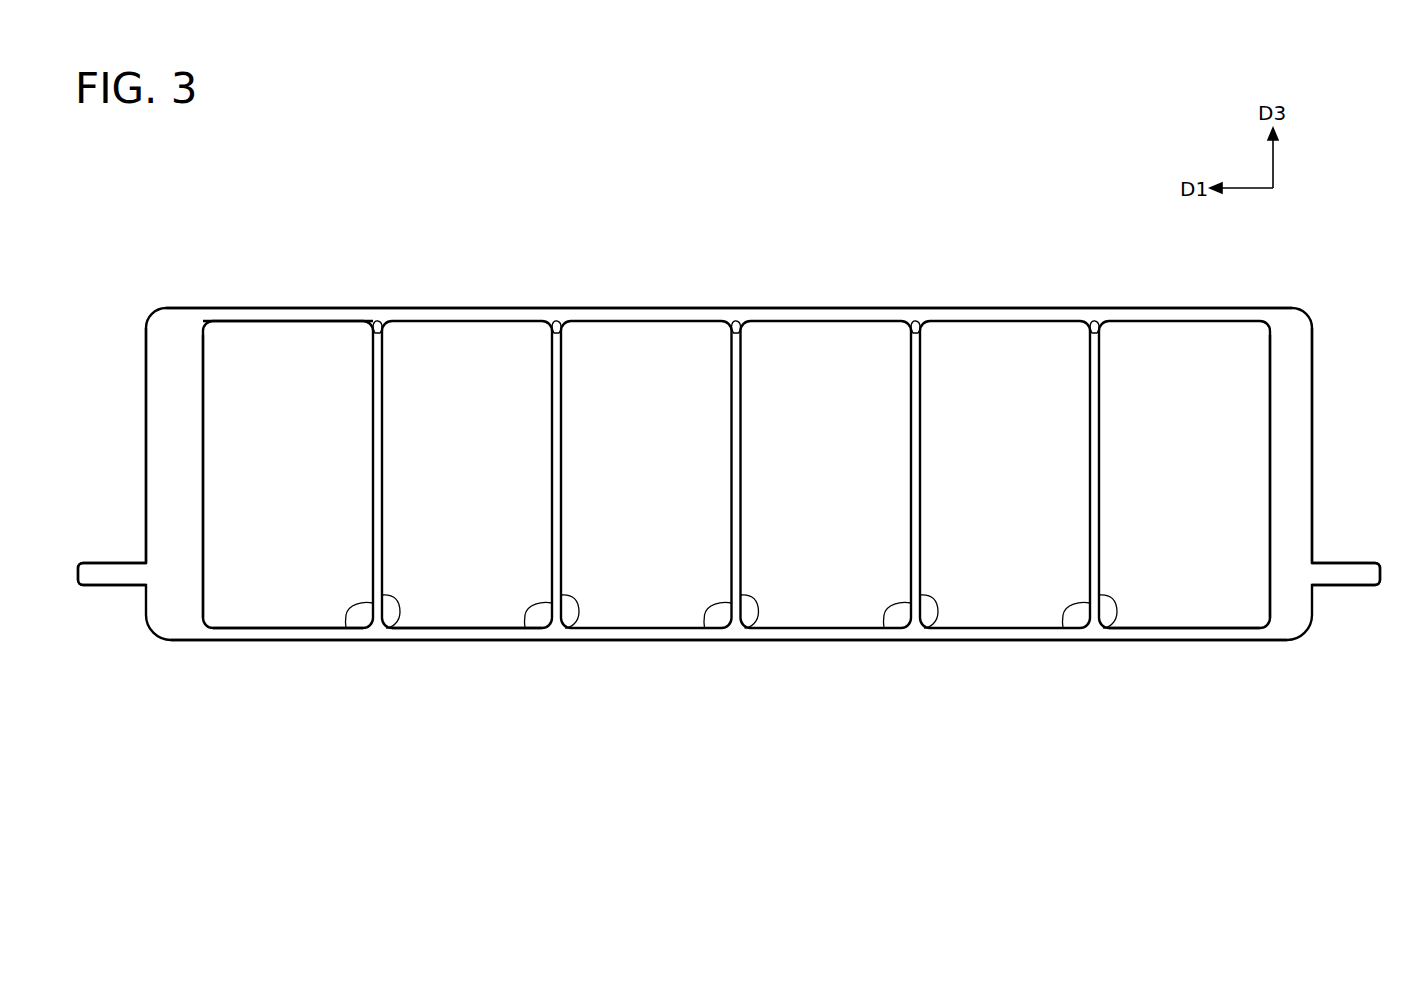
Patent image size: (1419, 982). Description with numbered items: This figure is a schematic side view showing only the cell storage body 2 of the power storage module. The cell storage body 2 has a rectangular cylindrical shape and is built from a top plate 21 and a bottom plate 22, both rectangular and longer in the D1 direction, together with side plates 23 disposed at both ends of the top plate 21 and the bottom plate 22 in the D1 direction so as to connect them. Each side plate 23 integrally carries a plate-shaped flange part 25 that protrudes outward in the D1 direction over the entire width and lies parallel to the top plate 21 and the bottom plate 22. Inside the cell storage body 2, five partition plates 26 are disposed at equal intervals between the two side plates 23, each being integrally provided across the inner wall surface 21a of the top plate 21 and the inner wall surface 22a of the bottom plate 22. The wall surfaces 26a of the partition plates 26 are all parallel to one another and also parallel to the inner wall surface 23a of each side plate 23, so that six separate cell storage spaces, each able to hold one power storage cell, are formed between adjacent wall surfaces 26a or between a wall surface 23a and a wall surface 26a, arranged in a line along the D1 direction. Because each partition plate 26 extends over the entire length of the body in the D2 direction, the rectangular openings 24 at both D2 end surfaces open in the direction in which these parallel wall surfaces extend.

The cell storage body 2 is at (198, 308).
The top plate 21 is at (625, 309).
The inner wall surface of the top plate 21a is at (662, 323).
The bottom plate 22 is at (737, 641).
The inner wall surface of the bottom plate 22a is at (1215, 628).
The side plate 23 is at (158, 341).
The inner wall surface of the side plate 23a is at (208, 412).
The opening 24 is at (298, 582).
The flange part 25 is at (92, 560).
The partition plate 26 is at (381, 320).
The wall surface of the partition plate 26a is at (346, 628).